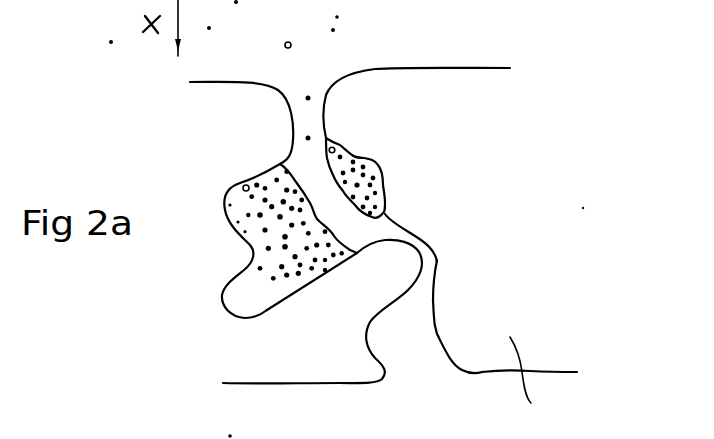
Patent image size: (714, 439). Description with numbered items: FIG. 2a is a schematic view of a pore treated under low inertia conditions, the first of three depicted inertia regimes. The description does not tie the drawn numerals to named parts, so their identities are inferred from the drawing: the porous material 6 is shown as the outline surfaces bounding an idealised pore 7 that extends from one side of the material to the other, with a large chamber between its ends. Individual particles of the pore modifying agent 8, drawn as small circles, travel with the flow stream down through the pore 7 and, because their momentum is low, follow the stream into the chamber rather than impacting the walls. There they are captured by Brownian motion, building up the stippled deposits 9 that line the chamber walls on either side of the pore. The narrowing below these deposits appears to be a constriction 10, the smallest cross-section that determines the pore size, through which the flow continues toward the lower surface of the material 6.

The tooth / tooth surface 6 is at (529, 387).
The interdental space (gap) 7 is at (318, 86).
The abrasive particles 8 is at (285, 48).
The plaque deposits 9 is at (398, 160).
The gum line / gingival margin 10 is at (442, 257).